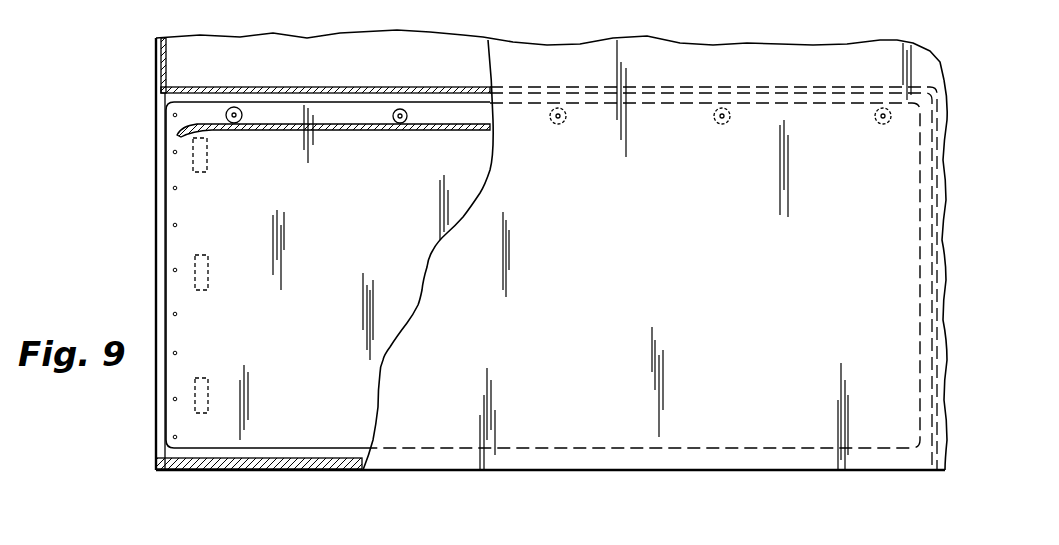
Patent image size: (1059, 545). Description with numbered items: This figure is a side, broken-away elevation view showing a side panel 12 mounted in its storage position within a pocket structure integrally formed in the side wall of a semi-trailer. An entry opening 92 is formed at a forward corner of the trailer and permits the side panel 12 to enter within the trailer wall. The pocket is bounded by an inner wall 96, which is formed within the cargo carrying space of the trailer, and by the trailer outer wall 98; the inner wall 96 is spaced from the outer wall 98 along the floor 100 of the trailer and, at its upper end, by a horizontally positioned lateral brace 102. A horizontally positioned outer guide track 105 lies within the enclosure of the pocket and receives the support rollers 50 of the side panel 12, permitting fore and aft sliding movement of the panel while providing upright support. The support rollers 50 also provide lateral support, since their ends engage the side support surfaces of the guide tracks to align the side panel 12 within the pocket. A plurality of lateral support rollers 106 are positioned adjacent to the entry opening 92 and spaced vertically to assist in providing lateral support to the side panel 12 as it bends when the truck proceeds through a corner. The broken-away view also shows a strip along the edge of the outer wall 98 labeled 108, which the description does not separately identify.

The entry opening 92 is at (161, 249).
The lateral brace 102 is at (354, 86).
The inner wall 96 is at (447, 99).
The outer guide track 105 is at (347, 118).
The support rollers 50 is at (237, 107).
The lateral support rollers 106 is at (208, 164).
The floor 100 is at (300, 458).
The side panel 12 is at (336, 268).
The trailer outer wall 98 is at (668, 264).
The edge strip 108 is at (930, 222).